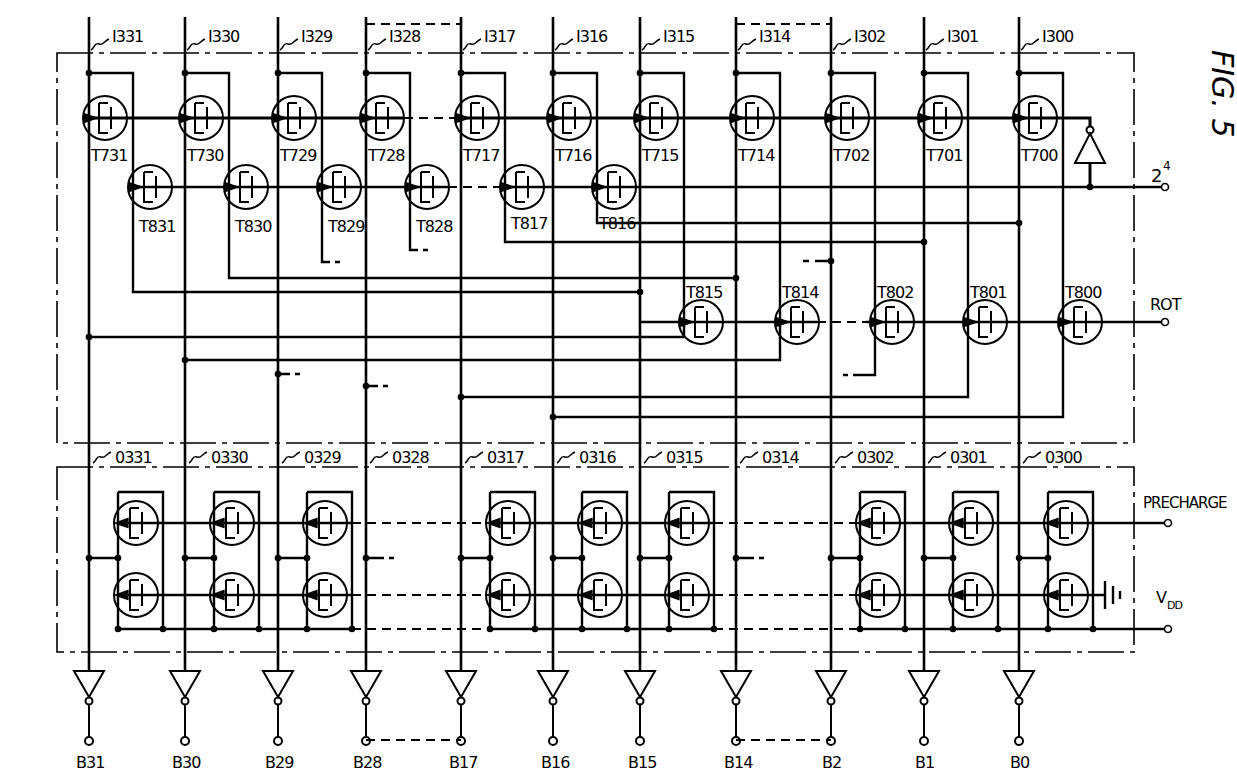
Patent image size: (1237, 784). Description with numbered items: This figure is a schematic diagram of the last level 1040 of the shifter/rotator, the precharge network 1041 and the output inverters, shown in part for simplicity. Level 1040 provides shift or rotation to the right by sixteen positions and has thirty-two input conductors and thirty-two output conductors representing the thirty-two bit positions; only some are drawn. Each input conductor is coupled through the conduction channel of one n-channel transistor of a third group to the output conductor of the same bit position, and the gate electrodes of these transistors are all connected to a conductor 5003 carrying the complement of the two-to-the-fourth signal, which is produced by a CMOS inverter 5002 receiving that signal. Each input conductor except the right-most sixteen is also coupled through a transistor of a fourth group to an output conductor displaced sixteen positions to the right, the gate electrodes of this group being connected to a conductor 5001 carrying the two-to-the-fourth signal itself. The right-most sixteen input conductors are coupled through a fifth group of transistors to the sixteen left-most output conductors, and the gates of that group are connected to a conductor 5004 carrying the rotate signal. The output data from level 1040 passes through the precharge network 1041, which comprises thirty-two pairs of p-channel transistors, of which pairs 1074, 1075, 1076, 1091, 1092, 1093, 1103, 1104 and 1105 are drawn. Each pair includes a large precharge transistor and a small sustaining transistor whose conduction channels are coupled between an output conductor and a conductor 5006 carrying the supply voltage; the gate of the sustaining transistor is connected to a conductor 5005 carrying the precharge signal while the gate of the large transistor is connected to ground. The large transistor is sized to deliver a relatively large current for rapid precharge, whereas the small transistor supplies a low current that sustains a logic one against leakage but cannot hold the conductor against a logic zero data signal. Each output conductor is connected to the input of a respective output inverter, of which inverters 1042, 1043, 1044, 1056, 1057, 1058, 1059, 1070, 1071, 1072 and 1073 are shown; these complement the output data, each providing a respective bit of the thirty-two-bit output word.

The level 1040 is at (623, 248).
The precharge network 1041 is at (626, 555).
The conductor 5001 is at (1144, 202).
The CMOS inverter 5002 is at (1094, 133).
The conductor 5003 is at (1088, 108).
The conductor 5004 is at (1149, 339).
The conductor 5005 is at (1151, 540).
The conductor 5006 is at (1151, 645).
The output inverter 1042 is at (1043, 708).
The output inverter 1043 is at (948, 708).
The output inverter 1044 is at (855, 708).
The output inverter 1056 is at (760, 708).
The output inverter 1057 is at (664, 708).
The output inverter 1058 is at (577, 708).
The output inverter 1059 is at (485, 708).
The output inverter 1070 is at (390, 708).
The output inverter 1071 is at (302, 708).
The output inverter 1072 is at (209, 708).
The output inverter 1073 is at (113, 708).
The pair of p-channel transistors 1074 is at (1056, 572).
The pair of p-channel transistors 1075 is at (961, 572).
The pair of p-channel transistors 1076 is at (868, 572).
The pair of p-channel transistors 1091 is at (677, 572).
The pair of p-channel transistors 1092 is at (590, 572).
The pair of p-channel transistors 1093 is at (498, 572).
The pair of p-channel transistors 1103 is at (315, 572).
The pair of p-channel transistors 1104 is at (222, 572).
The pair of p-channel transistors 1105 is at (126, 572).